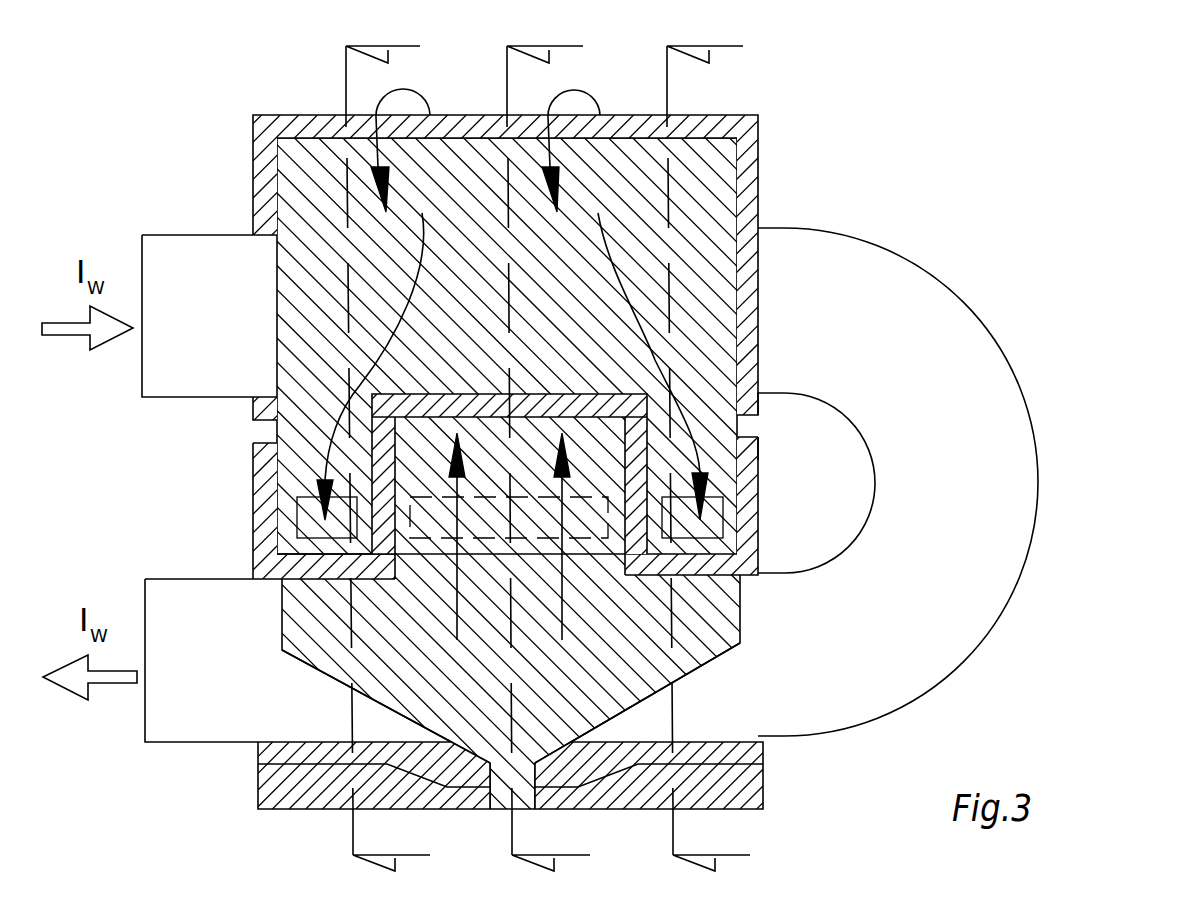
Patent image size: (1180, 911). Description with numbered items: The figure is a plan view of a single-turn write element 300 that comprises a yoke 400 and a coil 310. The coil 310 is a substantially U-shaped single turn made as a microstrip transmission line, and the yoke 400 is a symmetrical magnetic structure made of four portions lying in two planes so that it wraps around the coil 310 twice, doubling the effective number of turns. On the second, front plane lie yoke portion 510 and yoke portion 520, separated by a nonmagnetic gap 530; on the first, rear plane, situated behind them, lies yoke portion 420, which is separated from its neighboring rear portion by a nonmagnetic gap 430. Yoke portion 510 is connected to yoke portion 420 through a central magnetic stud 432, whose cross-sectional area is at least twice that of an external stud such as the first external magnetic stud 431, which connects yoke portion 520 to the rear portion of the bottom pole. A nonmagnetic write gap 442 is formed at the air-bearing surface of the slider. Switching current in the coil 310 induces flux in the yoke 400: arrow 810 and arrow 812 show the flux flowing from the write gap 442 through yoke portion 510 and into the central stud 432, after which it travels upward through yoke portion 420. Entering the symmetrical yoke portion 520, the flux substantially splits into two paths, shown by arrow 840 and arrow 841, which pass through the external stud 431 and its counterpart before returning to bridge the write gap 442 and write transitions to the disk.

The single-turn write element 300 is at (1094, 160).
The coil 310 is at (955, 645).
The yoke 400 is at (605, 160).
The yoke portion 420 is at (287, 122).
The nonmagnetic gap 430 is at (750, 428).
The first external magnetic stud 431 is at (295, 528).
The central magnetic stud 432 is at (725, 520).
The write gap 442 is at (497, 811).
The yoke portion 510 is at (630, 698).
The yoke portion 520 is at (316, 148).
The nonmagnetic gap 530 is at (307, 568).
The arrow 810 is at (453, 622).
The arrow 812 is at (565, 620).
The arrow 840 is at (385, 352).
The arrow 841 is at (627, 320).